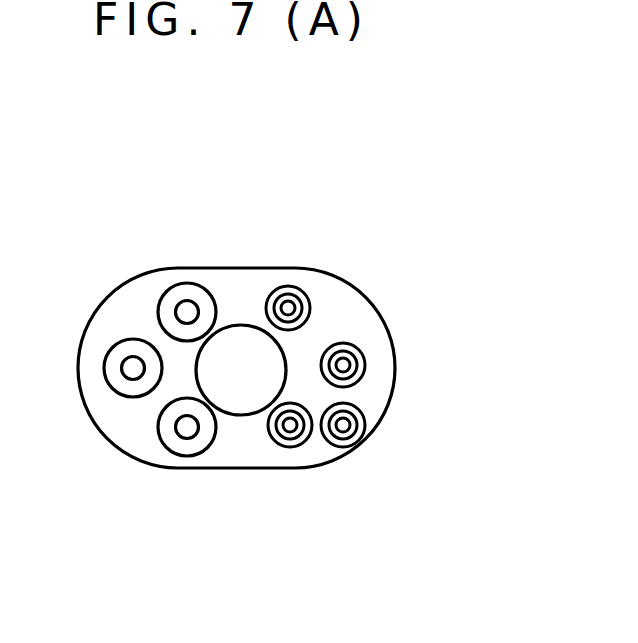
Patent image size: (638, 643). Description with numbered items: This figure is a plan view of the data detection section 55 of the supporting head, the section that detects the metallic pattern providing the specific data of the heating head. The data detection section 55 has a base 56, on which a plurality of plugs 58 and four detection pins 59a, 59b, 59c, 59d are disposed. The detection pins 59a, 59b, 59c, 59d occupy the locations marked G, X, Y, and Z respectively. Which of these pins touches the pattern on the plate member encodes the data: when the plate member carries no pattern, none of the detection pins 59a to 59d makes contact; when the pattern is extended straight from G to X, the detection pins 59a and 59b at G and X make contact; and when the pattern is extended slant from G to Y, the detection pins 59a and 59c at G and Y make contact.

The data detection section 55 is at (348, 200).
The base 56 is at (357, 312).
The plugs 58 is at (133, 360).
The detection pin 59a is at (290, 306).
The detection pin 59b is at (290, 425).
The detection pin 59c is at (343, 425).
The detection pin 59d is at (345, 366).